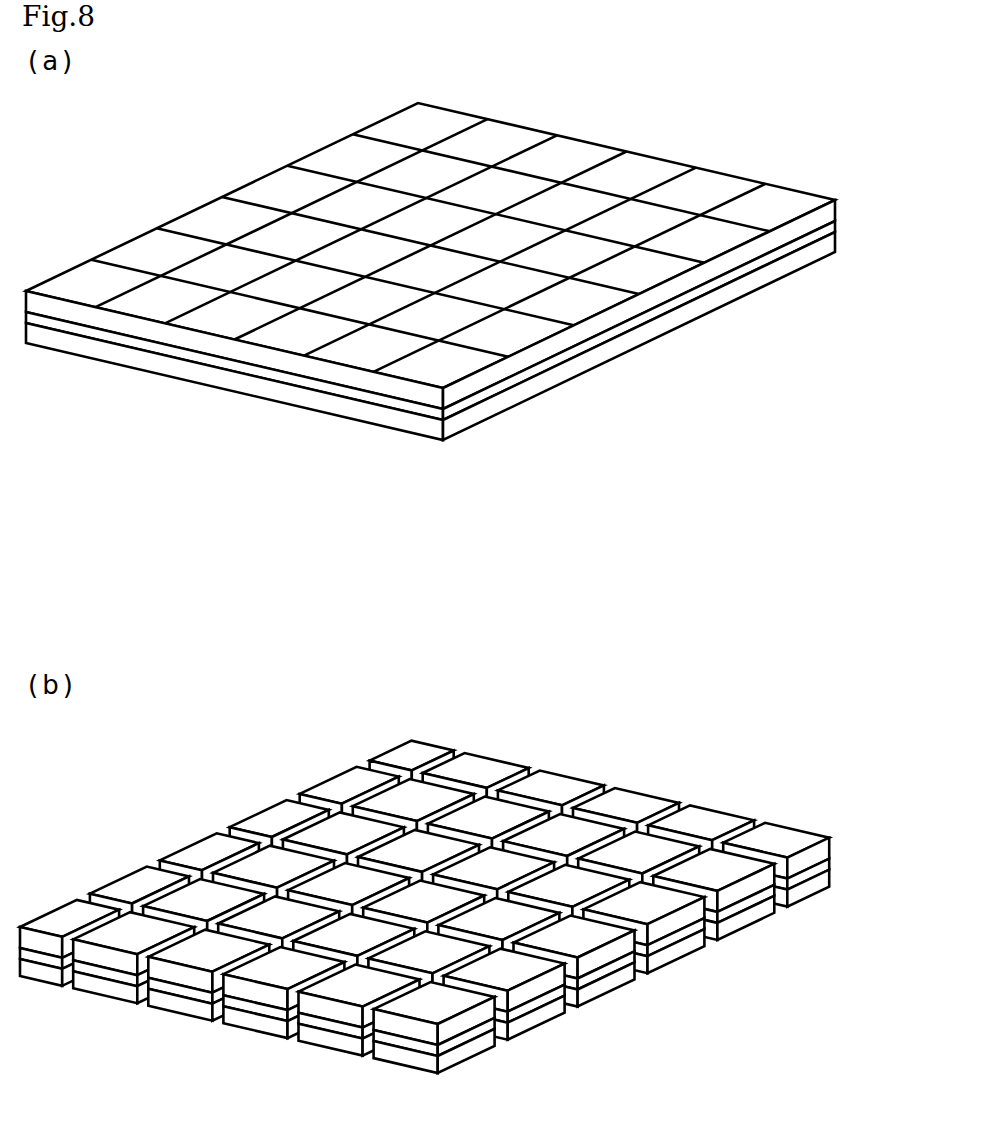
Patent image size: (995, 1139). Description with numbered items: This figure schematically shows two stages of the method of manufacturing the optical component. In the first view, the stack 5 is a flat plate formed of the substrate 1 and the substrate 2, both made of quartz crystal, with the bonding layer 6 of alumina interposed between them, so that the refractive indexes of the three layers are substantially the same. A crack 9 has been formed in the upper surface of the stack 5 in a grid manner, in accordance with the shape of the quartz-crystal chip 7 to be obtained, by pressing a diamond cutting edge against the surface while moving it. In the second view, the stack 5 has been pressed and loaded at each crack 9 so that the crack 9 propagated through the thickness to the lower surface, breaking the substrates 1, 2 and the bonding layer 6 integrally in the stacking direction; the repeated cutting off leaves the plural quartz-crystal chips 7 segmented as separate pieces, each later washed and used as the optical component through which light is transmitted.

The substrate 1 is at (836, 244).
The substrate 2 is at (836, 207).
The stack 5 is at (777, 340).
The bonding layer 6 is at (836, 224).
The quartz-crystal chip 7 is at (473, 1057).
The crack 9 is at (743, 194).